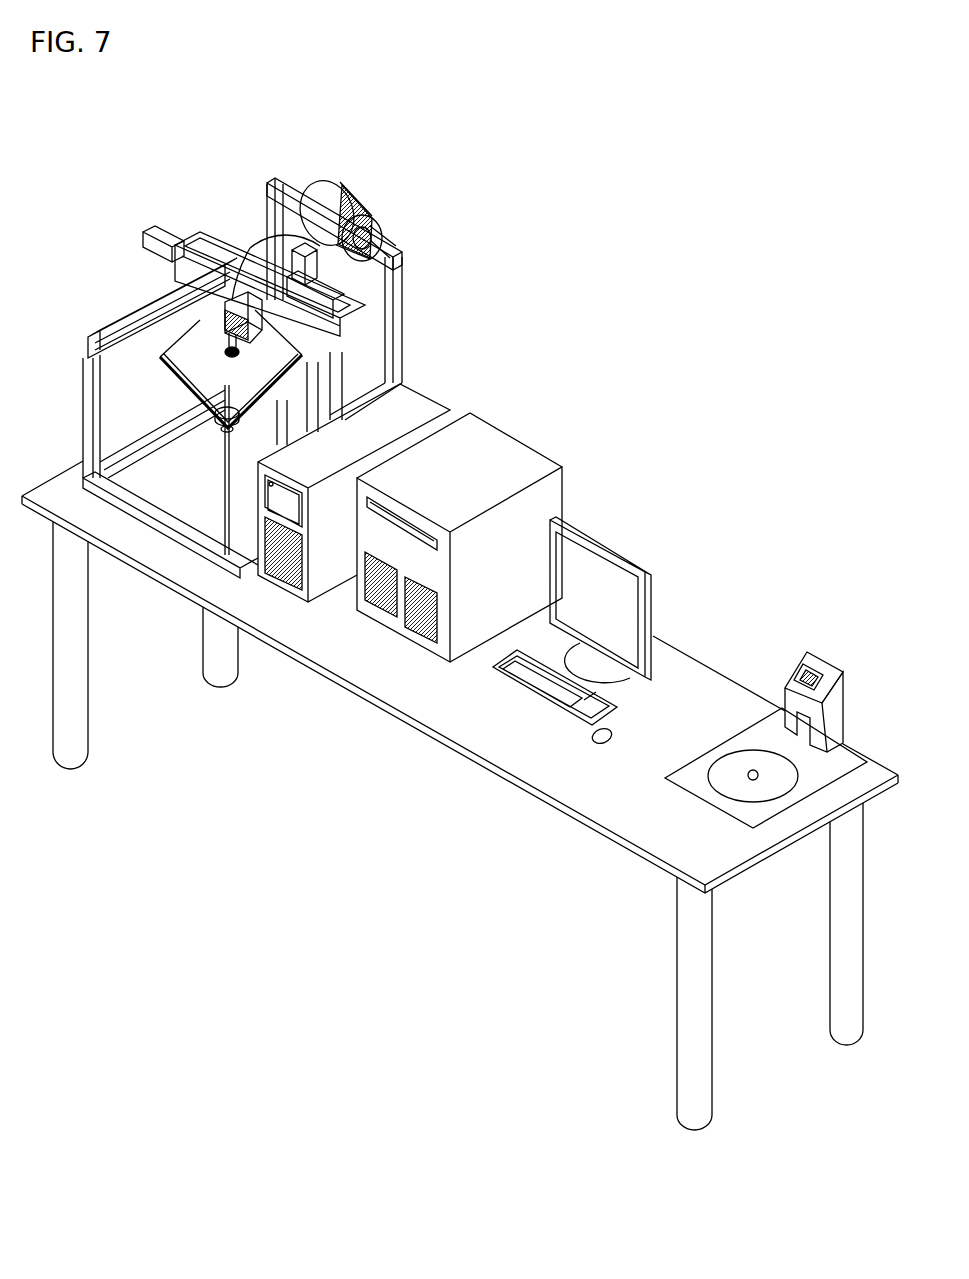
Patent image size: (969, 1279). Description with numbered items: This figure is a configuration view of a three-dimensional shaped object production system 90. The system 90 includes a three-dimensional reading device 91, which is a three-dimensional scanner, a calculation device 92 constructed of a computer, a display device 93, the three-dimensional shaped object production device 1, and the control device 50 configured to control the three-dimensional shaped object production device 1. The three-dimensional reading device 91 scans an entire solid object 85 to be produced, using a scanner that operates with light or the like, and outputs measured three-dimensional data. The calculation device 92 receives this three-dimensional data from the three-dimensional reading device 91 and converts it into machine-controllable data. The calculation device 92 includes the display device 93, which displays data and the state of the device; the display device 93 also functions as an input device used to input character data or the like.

The three-dimensional shaped object production device 1 is at (237, 212).
The control device 50 is at (413, 405).
The solid object 85 is at (745, 776).
The three-dimensional shaped object production system 90 is at (615, 384).
The three-dimensional reading device 91 is at (812, 655).
The calculation device 92 is at (514, 450).
The display device 93 is at (610, 540).